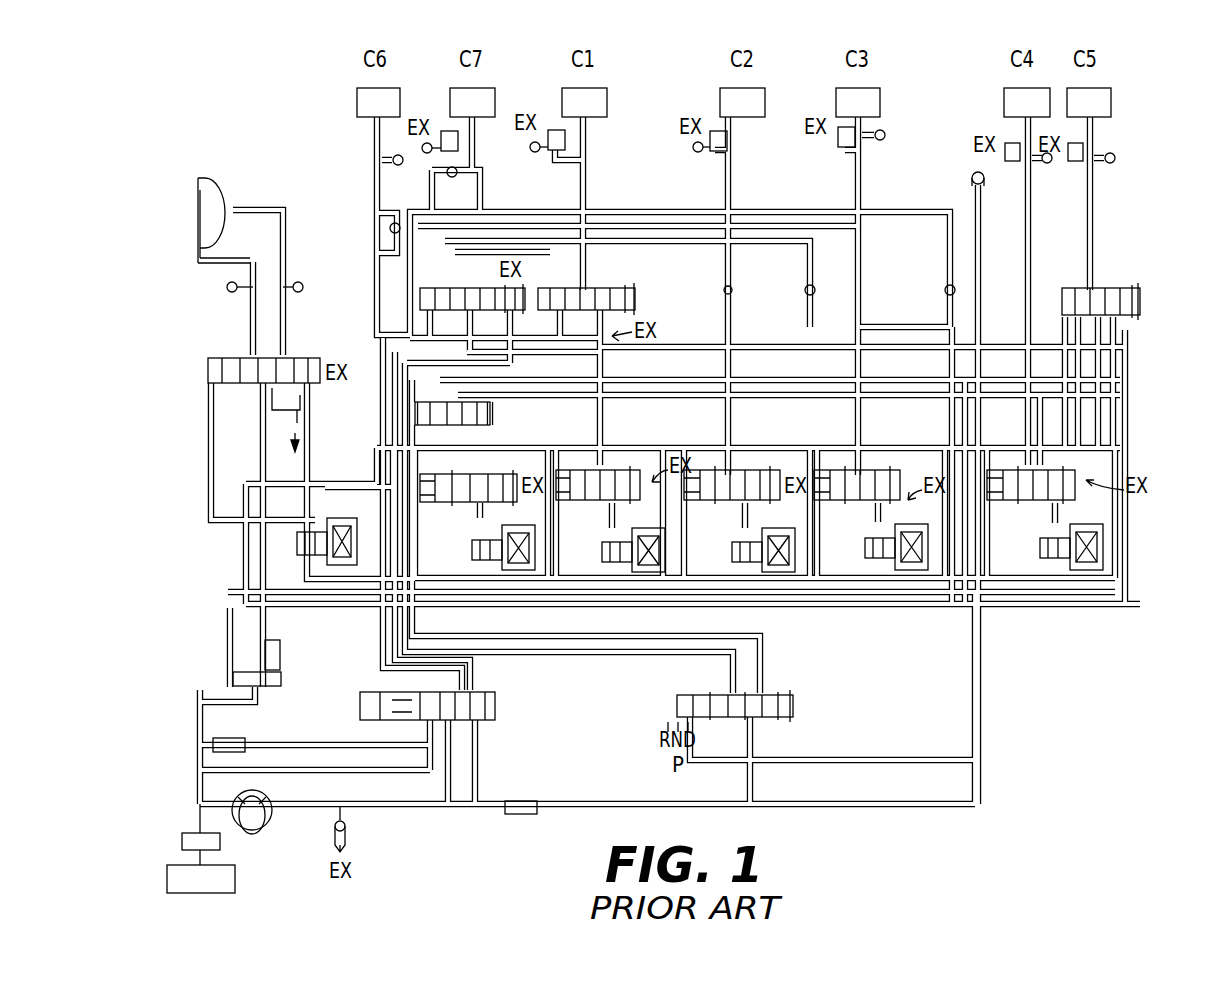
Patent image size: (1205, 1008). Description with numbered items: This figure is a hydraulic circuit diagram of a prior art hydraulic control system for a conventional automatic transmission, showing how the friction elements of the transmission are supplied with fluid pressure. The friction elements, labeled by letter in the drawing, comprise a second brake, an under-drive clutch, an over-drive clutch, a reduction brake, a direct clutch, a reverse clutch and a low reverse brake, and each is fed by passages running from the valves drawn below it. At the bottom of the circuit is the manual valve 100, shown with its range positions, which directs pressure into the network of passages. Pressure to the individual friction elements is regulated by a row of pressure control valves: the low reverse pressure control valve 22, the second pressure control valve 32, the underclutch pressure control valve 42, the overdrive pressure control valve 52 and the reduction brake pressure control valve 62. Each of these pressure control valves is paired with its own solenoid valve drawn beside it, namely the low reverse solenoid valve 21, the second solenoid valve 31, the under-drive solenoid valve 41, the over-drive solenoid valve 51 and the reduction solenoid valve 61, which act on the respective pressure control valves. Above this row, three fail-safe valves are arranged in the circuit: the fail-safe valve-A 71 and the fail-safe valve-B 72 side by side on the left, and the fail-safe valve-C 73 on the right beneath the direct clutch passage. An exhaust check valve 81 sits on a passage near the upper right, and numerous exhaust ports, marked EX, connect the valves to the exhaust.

The fail-safe valve-A 71 is at (415, 298).
The fail-safe valve-B 72 is at (642, 297).
The fail-safe valve-C 73 is at (1120, 282).
The exhaust check valve 81 is at (971, 176).
The low reverse solenoid valve 21 is at (542, 561).
The low reverse pressure control valve 22 is at (441, 508).
The second solenoid valve 31 is at (672, 561).
The second pressure control valve 32 is at (576, 506).
The under-drive solenoid valve 41 is at (800, 561).
The underclutch pressure control valve 42 is at (701, 506).
The over-drive solenoid valve 51 is at (886, 578).
The overdrive pressure control valve 52 is at (831, 506).
The reduction solenoid valve 61 is at (1063, 577).
The reduction brake pressure control valve 62 is at (1011, 506).
The manual valve 100 is at (798, 706).